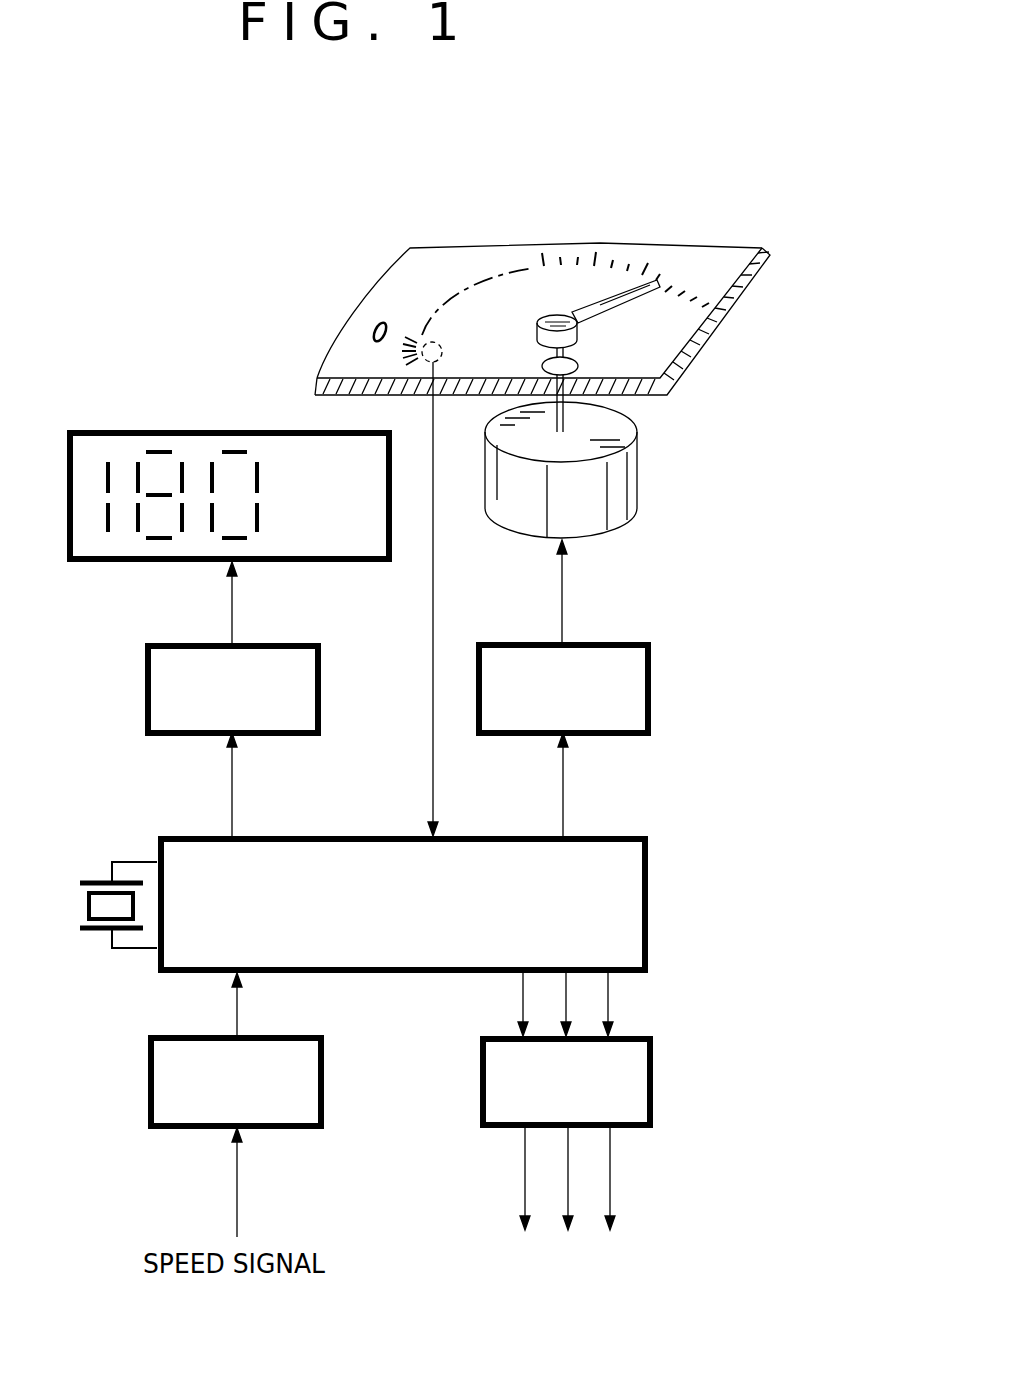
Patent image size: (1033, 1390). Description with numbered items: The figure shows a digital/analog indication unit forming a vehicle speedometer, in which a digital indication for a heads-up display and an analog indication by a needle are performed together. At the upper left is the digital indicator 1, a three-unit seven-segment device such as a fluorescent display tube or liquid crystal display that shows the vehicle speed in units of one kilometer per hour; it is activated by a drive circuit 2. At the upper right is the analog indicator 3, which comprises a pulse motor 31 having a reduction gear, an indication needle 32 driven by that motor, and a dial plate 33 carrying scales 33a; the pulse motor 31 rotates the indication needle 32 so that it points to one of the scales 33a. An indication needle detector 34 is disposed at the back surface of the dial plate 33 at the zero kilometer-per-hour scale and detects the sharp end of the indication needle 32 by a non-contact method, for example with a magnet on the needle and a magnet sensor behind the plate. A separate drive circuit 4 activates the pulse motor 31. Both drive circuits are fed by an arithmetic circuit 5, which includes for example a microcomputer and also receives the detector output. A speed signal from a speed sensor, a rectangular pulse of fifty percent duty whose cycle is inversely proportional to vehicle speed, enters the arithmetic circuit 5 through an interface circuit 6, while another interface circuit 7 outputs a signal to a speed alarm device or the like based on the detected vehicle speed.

The digital indicator 1 is at (274, 432).
The drive circuit 2 is at (320, 683).
The analog indicator 3 is at (598, 347).
The drive circuit 4 is at (653, 682).
The arithmetic circuit 5 is at (652, 911).
The interface circuit 6 is at (325, 1076).
The interface circuit 7 is at (655, 1076).
The pulse motor 31 is at (630, 422).
The indication needle 32 is at (617, 307).
The dial plate 33 is at (717, 275).
The scales 33a is at (673, 278).
The indication needle detector 34 is at (425, 318).